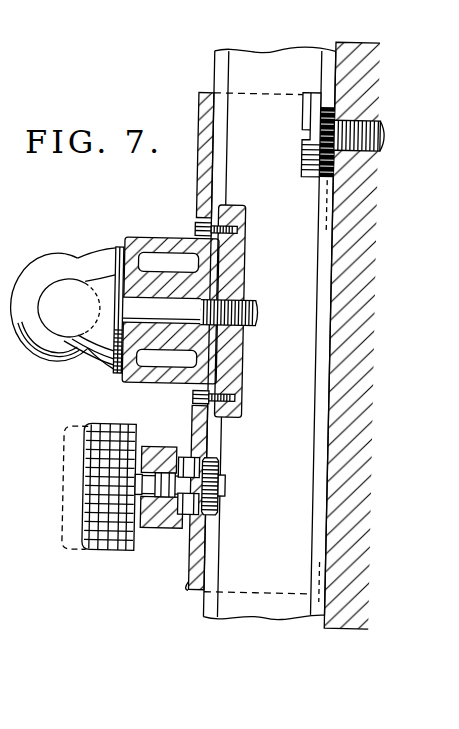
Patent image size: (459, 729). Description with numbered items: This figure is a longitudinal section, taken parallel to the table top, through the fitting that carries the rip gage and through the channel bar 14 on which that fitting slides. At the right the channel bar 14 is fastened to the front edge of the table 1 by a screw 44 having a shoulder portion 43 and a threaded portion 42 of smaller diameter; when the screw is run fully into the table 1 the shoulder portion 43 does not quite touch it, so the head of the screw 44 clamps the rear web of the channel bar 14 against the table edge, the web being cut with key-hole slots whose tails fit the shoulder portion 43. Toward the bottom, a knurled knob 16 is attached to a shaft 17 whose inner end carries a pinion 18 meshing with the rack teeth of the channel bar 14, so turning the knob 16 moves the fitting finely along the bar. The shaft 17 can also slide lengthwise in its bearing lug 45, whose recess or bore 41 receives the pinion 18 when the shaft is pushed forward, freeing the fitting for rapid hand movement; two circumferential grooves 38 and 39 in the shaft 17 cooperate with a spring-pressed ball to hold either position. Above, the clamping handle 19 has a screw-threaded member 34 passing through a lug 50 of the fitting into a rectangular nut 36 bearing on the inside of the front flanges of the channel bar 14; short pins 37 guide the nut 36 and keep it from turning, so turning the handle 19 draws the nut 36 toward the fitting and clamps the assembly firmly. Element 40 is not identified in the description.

The table 1 is at (347, 47).
The channel bar 14 is at (274, 604).
The knurled knob 16 is at (123, 542).
The shaft 17 is at (175, 473).
The pinion 18 is at (222, 469).
The clamping rod or lever 19 is at (61, 267).
The screw-threaded member 34 is at (256, 308).
The rectangular nut 36 is at (243, 258).
The short pins 37 is at (194, 226).
The circumferential groove 38 is at (191, 525).
The circumferential groove 39 is at (171, 526).
The collar 40 is at (229, 488).
The recess or bore 41 is at (201, 512).
The threaded portion 42 is at (318, 175).
The shoulder portion 43 is at (300, 119).
The screw 44 is at (307, 102).
The bearing lug 45 is at (157, 447).
The lug 50 is at (126, 386).